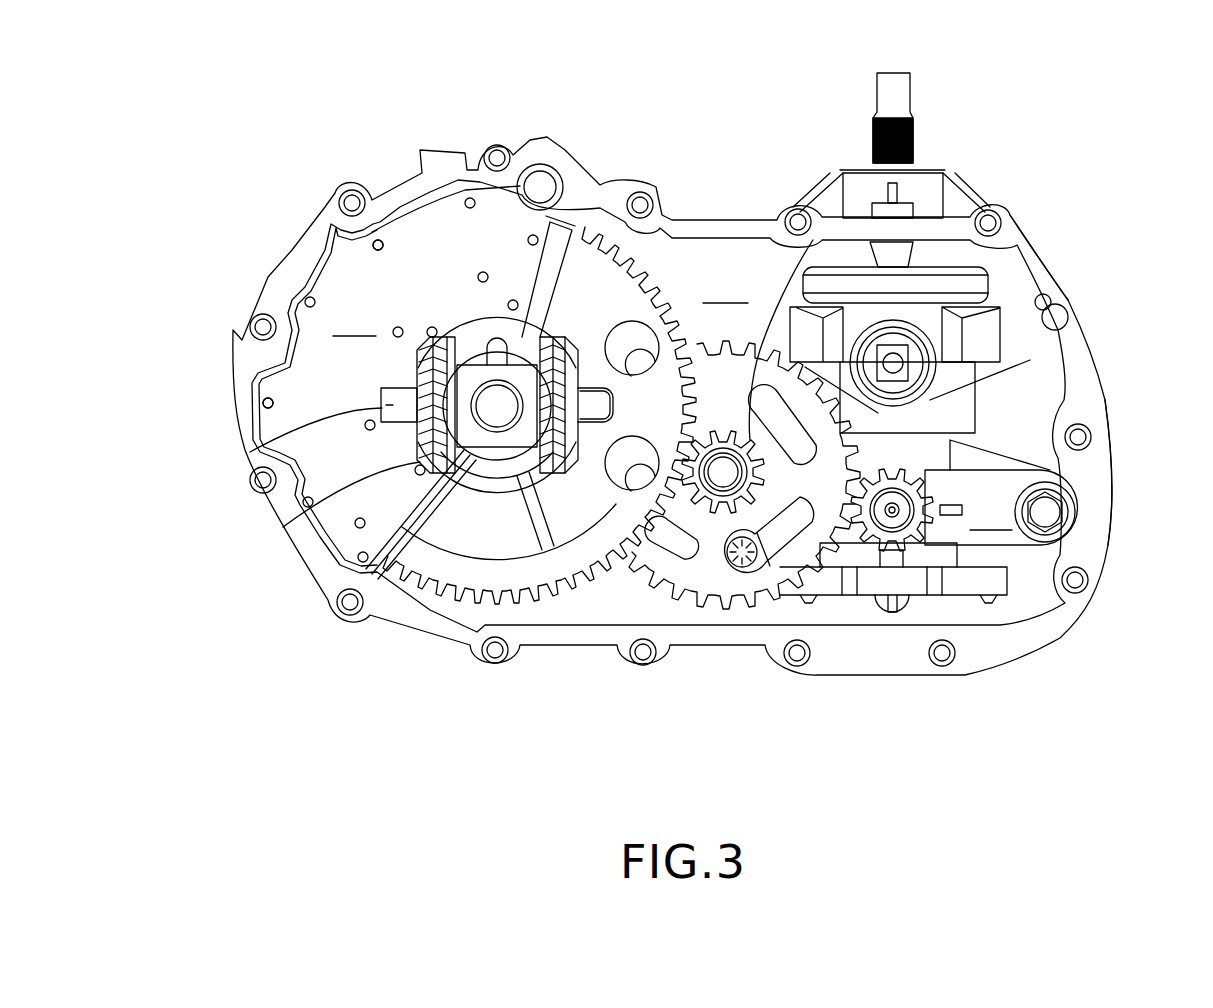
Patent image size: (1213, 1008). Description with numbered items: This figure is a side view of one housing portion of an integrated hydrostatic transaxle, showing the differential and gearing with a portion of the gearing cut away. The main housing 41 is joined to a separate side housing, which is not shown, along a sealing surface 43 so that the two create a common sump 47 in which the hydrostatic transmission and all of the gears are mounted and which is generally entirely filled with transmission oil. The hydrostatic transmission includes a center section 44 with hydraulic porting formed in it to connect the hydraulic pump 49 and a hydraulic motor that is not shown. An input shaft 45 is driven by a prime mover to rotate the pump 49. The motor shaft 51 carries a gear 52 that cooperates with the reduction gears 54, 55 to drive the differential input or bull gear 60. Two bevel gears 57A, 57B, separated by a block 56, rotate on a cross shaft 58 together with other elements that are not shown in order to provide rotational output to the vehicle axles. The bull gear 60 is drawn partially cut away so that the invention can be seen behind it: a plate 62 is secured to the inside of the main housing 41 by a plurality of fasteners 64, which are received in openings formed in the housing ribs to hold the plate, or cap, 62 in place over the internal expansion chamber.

The housing 41 is at (1040, 258).
The sealing surface 43 is at (1100, 455).
The center section 44 is at (1001, 492).
The input shaft 45 is at (902, 87).
The sump 47 is at (725, 285).
The hydraulic pump 49 is at (965, 398).
The motor shaft 51 is at (892, 530).
The gear 52 is at (920, 525).
The reduction gear 54 is at (697, 578).
The reduction gear 55 is at (740, 556).
The block 56 is at (483, 437).
The bevel gear 57A is at (468, 442).
The bevel gear 57B is at (568, 345).
The cross shaft 58 is at (382, 407).
The bull gear 60 is at (600, 233).
The plate 62 is at (672, 406).
The fasteners 64 is at (378, 240).